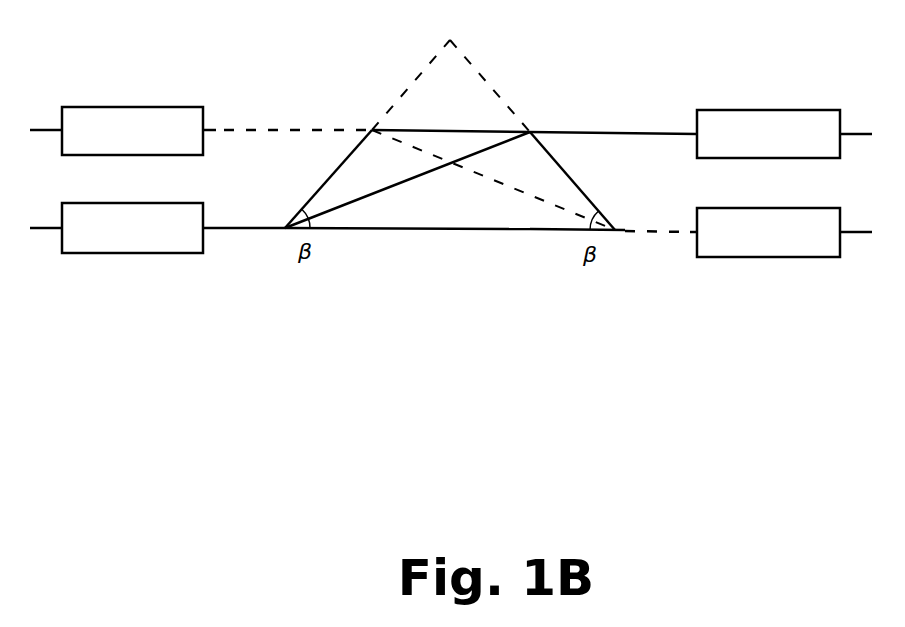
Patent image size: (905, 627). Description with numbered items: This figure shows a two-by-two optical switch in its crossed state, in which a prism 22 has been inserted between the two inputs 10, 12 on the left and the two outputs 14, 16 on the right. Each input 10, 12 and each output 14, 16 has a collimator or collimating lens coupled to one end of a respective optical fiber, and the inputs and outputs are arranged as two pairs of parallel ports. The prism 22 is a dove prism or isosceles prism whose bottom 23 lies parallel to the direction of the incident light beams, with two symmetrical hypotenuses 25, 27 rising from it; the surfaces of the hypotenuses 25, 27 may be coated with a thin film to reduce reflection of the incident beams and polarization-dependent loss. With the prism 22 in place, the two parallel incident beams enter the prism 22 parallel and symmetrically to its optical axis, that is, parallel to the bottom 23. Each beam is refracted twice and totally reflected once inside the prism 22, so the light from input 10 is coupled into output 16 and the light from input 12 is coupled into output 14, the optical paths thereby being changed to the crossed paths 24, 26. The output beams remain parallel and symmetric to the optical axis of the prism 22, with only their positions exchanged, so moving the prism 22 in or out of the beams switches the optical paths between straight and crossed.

The input 10 is at (140, 117).
The input 12 is at (145, 243).
The output 14 is at (745, 120).
The output 16 is at (753, 248).
The prism 22 is at (447, 228).
The bottom 23 is at (532, 229).
The optical path 24 is at (287, 125).
The hypotenuse 25 is at (335, 170).
The optical path 26 is at (245, 230).
The hypotenuse 27 is at (562, 170).